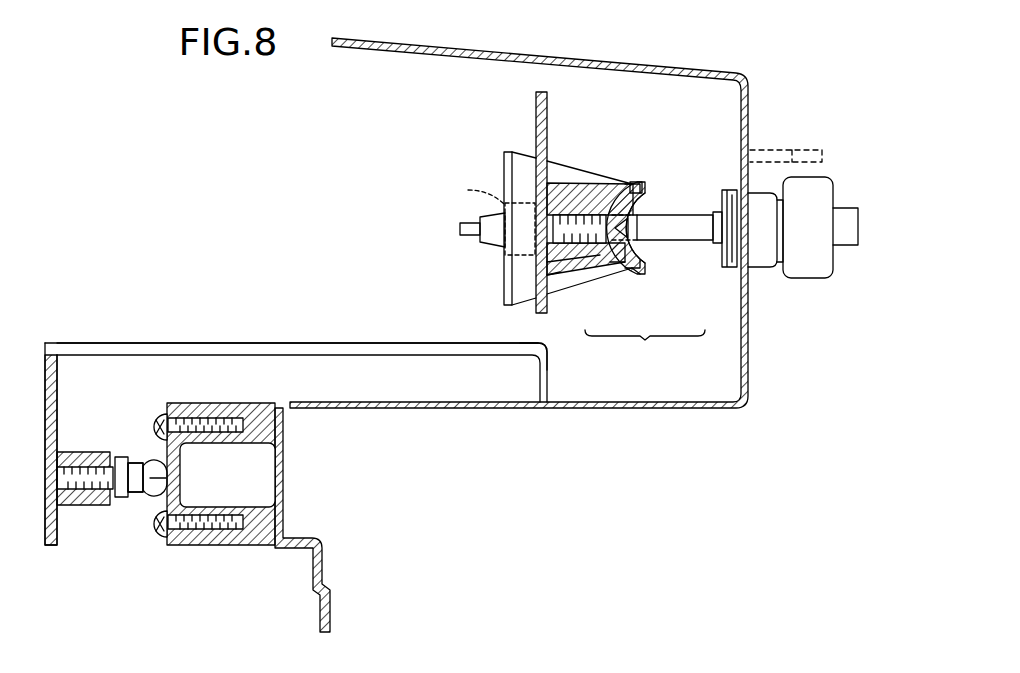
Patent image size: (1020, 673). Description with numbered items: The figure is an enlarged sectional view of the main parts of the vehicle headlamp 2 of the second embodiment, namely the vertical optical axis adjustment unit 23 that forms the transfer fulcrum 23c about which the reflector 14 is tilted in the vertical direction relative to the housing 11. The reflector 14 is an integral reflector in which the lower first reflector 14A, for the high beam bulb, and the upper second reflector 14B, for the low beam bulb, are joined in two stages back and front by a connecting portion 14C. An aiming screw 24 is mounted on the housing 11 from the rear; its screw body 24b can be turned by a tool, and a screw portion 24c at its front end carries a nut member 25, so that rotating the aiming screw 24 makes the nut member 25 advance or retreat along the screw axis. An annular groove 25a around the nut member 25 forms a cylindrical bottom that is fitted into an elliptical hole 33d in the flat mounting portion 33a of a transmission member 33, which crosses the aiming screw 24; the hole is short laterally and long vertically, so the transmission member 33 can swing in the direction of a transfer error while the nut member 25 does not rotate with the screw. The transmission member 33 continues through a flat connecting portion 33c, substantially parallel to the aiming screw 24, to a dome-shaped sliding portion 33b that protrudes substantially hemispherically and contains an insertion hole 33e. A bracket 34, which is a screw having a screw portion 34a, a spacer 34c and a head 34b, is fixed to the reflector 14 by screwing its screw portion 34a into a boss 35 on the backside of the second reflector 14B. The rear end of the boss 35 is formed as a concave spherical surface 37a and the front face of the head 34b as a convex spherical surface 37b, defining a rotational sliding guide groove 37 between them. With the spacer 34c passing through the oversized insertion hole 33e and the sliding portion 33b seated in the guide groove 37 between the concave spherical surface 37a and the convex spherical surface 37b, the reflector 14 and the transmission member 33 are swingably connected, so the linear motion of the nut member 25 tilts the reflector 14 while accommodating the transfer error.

The vehicle headlamp 2 is at (236, 172).
The housing 11 is at (405, 409).
The reflector 14 is at (68, 340).
The first reflector 14A is at (63, 398).
The second reflector 14B is at (538, 335).
The connecting portion 14C is at (118, 343).
The vertical optical axis adjustment unit 23 is at (562, 372).
The transfer fulcrum 23c is at (143, 500).
The aiming screw 24 is at (703, 212).
The screw body 24b is at (678, 245).
The screw portion 24c is at (816, 276).
The nut member 25 is at (483, 246).
The annular groove 25a is at (513, 265).
The transmission member 33 is at (518, 146).
The mounting portion 33a is at (503, 172).
The sliding portion 33b is at (632, 180).
The connecting portion 33c is at (580, 172).
The hole 33d is at (466, 191).
The insertion hole 33e is at (620, 195).
The bracket 34 is at (645, 346).
The screw portion 34a is at (585, 260).
The head 34b is at (642, 276).
The spacer 34c is at (628, 268).
The boss 35 is at (560, 270).
The rotational sliding guide groove 37 is at (633, 195).
The concave spherical surface 37a is at (638, 218).
The convex spherical surface 37b is at (624, 185).